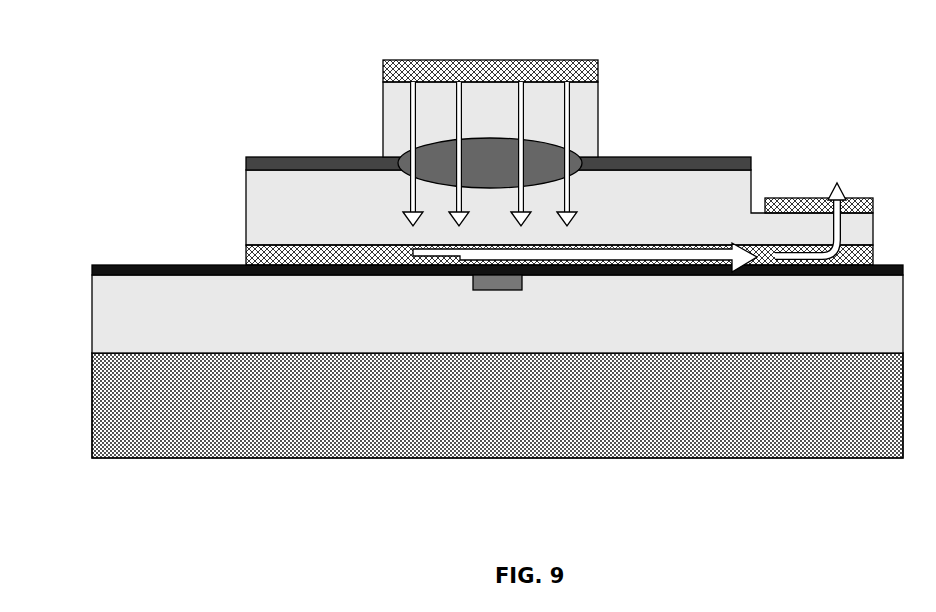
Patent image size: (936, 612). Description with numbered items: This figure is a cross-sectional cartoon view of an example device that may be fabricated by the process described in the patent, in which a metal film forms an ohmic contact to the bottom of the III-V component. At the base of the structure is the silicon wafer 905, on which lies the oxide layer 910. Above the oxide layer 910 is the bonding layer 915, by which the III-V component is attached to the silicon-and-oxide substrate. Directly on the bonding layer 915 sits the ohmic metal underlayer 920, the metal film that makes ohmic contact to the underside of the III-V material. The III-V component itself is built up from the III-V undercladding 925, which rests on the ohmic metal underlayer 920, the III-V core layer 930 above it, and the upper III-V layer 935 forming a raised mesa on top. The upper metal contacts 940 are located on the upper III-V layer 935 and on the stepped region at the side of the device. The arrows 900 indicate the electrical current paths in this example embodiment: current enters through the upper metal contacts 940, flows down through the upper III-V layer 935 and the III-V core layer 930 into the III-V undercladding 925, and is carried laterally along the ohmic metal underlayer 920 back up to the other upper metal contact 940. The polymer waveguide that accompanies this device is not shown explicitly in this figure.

The arrows 900 is at (683, 253).
The silicon wafer 905 is at (92, 390).
The oxide layer 910 is at (92, 298).
The bonding layer 915 is at (152, 265).
The ohmic metal underlayer 920 is at (331, 257).
The III-V undercladding 925 is at (246, 186).
The III-V core layer 930 is at (307, 157).
The upper III-V layer 935 is at (383, 118).
The upper metal contacts 940 is at (442, 60).